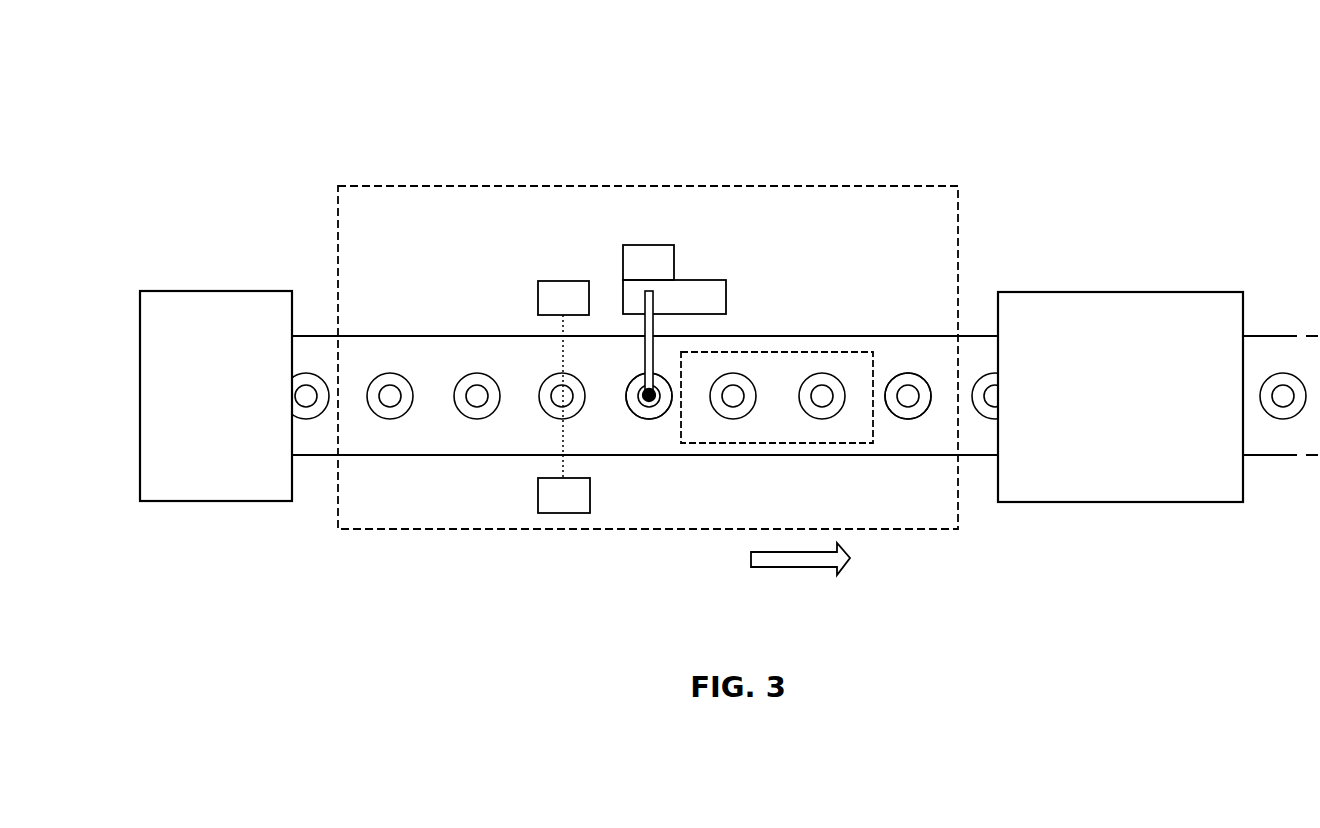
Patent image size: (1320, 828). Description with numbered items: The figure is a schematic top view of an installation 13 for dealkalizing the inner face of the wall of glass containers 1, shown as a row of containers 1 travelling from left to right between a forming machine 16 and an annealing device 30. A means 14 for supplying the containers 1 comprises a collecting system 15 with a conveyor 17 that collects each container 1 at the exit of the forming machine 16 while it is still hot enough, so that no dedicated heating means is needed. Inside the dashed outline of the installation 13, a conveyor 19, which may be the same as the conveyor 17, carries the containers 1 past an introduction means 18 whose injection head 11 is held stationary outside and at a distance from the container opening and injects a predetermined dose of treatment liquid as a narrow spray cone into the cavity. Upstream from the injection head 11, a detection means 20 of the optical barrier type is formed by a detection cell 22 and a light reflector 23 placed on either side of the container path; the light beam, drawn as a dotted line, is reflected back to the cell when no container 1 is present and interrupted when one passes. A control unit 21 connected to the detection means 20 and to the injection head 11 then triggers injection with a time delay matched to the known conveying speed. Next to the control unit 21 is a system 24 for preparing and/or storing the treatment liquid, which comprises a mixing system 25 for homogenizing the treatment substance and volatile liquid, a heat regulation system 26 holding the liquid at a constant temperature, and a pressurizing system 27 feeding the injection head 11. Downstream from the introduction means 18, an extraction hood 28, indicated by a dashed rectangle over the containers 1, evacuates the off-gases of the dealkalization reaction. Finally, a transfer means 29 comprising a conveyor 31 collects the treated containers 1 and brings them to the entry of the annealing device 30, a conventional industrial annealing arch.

The glass container 1 is at (392, 363).
The injection head 11 is at (658, 393).
The installation 13 is at (383, 180).
The means for supplying the container 14 is at (437, 473).
The collecting system 15 is at (398, 457).
The forming machine 16 is at (198, 342).
The conveyor 17 is at (413, 455).
The introduction means 18 is at (632, 340).
The conveyor 19 is at (652, 448).
The detection means 20 is at (562, 273).
The control unit 21 is at (648, 246).
The detection cell 22 is at (567, 493).
The light reflector 23 is at (550, 298).
The system for preparing and/or storing the treatment liquid 24 is at (726, 198).
The mixing system 25 is at (674, 297).
The heat regulation system 26 is at (674, 297).
The pressurizing system 27 is at (703, 281).
The extraction hood 28 is at (845, 443).
The transfer means 29 is at (892, 457).
The annealing device 30 is at (1137, 338).
The conveyor 31 is at (908, 433).